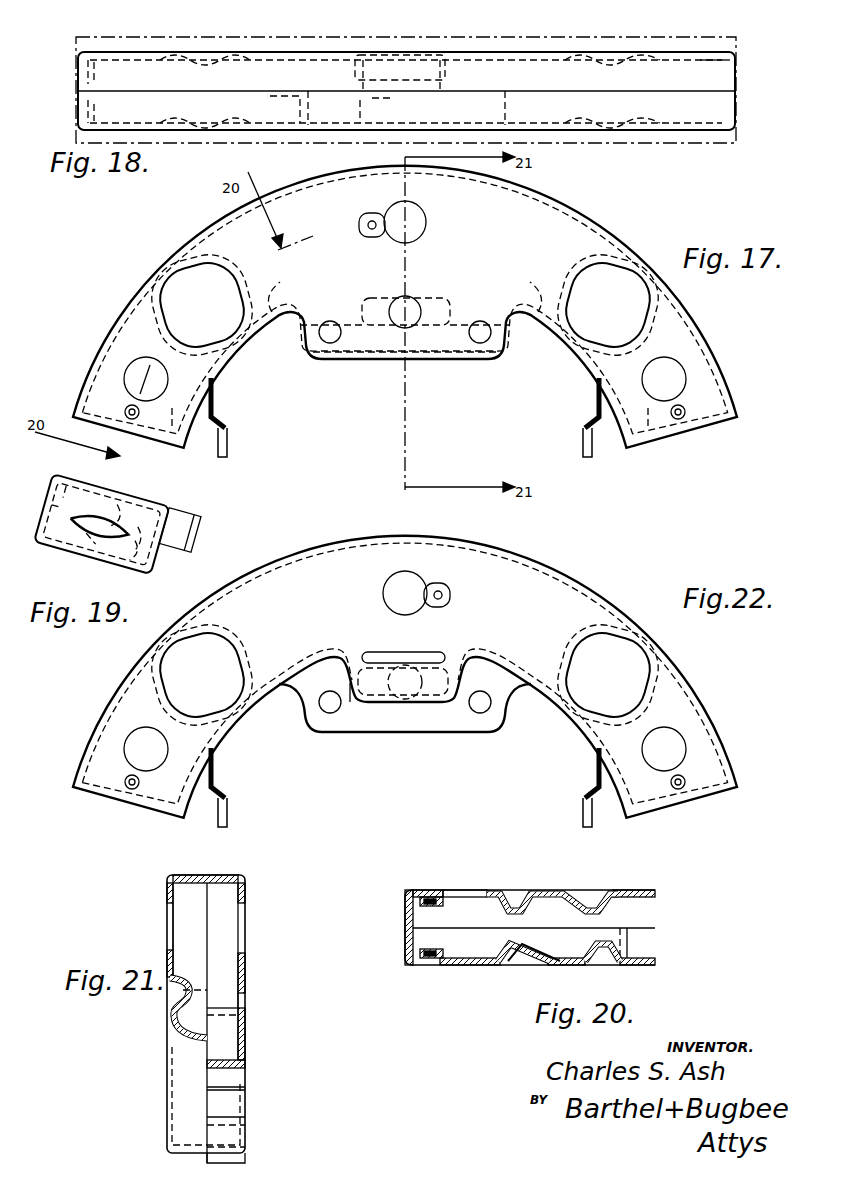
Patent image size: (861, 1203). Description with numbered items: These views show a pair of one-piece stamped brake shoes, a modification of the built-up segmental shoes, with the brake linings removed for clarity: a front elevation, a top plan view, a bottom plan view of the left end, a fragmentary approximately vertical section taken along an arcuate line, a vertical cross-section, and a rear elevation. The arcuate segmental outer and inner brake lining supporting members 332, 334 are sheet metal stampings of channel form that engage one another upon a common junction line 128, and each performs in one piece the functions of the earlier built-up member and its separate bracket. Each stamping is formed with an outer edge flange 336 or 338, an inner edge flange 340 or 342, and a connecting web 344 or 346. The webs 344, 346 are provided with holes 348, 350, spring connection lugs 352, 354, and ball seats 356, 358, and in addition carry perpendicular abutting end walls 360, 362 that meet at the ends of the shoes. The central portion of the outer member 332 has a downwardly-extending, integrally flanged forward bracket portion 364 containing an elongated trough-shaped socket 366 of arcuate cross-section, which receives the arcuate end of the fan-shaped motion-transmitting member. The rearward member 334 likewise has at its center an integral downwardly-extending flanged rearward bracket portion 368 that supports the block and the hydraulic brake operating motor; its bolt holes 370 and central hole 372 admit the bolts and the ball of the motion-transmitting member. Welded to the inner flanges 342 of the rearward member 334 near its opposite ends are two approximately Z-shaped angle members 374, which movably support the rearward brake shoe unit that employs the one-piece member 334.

In FIG. 18, the common junction line 128 is at (184, 100).
In FIG. 21, the common junction line 128 is at (220, 940).
In FIG. 18, the outer brake lining supporting member 332 is at (737, 72).
In FIG. 17, the outer brake lining supporting member 332 is at (405, 307).
In FIG. 19, the outer brake lining supporting member 332 is at (50, 556).
In FIG. 22, the outer brake lining supporting member 332 is at (583, 585).
In FIG. 21, the outer brake lining supporting member 332 is at (160, 882).
In FIG. 20, the outer brake lining supporting member 332 is at (645, 884).
In FIG. 18, the inner brake lining supporting member 334 is at (737, 115).
In FIG. 17, the inner brake lining supporting member 334 is at (222, 209).
In FIG. 19, the inner brake lining supporting member 334 is at (82, 480).
In FIG. 21, the inner brake lining supporting member 334 is at (255, 875).
In FIG. 20, the inner brake lining supporting member 334 is at (648, 970).
In FIG. 18, the outer edge flange 336 is at (708, 63).
In FIG. 19, the outer edge flange 336 is at (48, 522).
In FIG. 22, the outer edge flange 336 is at (312, 555).
In FIG. 18, the outer edge flange 338 is at (700, 125).
In FIG. 17, the outer edge flange 338 is at (305, 186).
In FIG. 19, the outer edge flange 338 is at (53, 488).
In FIG. 19, the inner edge flange 340 is at (146, 576).
In FIG. 22, the inner edge flange 340 is at (309, 658).
In FIG. 17, the inner edge flange 342 is at (284, 290).
In FIG. 19, the inner edge flange 342 is at (166, 500).
In FIG. 18, the connecting web 344 is at (262, 66).
In FIG. 19, the connecting web 344 is at (118, 566).
In FIG. 22, the connecting web 344 is at (518, 576).
In FIG. 21, the connecting web 344 is at (168, 898).
In FIG. 20, the connecting web 344 is at (648, 898).
In FIG. 18, the connecting web 346 is at (406, 109).
In FIG. 17, the connecting web 346 is at (548, 228).
In FIG. 19, the connecting web 346 is at (144, 495).
In FIG. 21, the connecting web 346 is at (246, 898).
In FIG. 20, the connecting web 346 is at (645, 955).
In FIG. 22, the hole 348 is at (143, 732).
In FIG. 21, the hole 348 is at (168, 918).
In FIG. 20, the hole 348 is at (480, 890).
In FIG. 17, the hole 350 is at (145, 361).
In FIG. 21, the hole 350 is at (246, 920).
In FIG. 20, the hole 350 is at (482, 966).
In FIG. 22, the spring connection lug 352 is at (128, 784).
In FIG. 20, the spring connection lug 352 is at (440, 902).
In FIG. 18, the spring connection lug 354 is at (380, 110).
In FIG. 17, the spring connection lug 354 is at (126, 409).
In FIG. 20, the spring connection lug 354 is at (440, 953).
In FIG. 18, the ball seat 356 is at (203, 50).
In FIG. 22, the ball seat 356 is at (405, 675).
In FIG. 20, the ball seat 356 is at (556, 891).
In FIG. 18, the ball seat 358 is at (200, 132).
In FIG. 17, the ball seat 358 is at (232, 282).
In FIG. 20, the ball seat 358 is at (528, 966).
In FIG. 18, the abutting end wall 360 is at (80, 75).
In FIG. 19, the abutting end wall 360 is at (138, 548).
In FIG. 22, the abutting end wall 360 is at (84, 795).
In FIG. 21, the abutting end wall 360 is at (196, 875).
In FIG. 20, the abutting end wall 360 is at (405, 915).
In FIG. 18, the abutting end wall 362 is at (78, 118).
In FIG. 17, the abutting end wall 362 is at (698, 400).
In FIG. 19, the abutting end wall 362 is at (68, 509).
In FIG. 21, the abutting end wall 362 is at (226, 875).
In FIG. 20, the abutting end wall 362 is at (405, 955).
In FIG. 18, the forward bracket portion 364 is at (448, 78).
In FIG. 17, the forward bracket portion 364 is at (362, 309).
In FIG. 22, the forward bracket portion 364 is at (350, 705).
In FIG. 21, the forward bracket portion 364 is at (170, 997).
In FIG. 17, the trough-shaped socket 366 is at (434, 298).
In FIG. 22, the trough-shaped socket 366 is at (436, 698).
In FIG. 21, the trough-shaped socket 366 is at (175, 1022).
In FIG. 18, the rearward bracket portion 368 is at (508, 105).
In FIG. 17, the rearward bracket portion 368 is at (376, 360).
In FIG. 22, the rearward bracket portion 368 is at (390, 722).
In FIG. 21, the rearward bracket portion 368 is at (247, 1065).
In FIG. 17, the bolt hole 370 is at (330, 342).
In FIG. 22, the bolt hole 370 is at (330, 712).
In FIG. 17, the central hole 372 is at (395, 302).
In FIG. 22, the central hole 372 is at (396, 653).
In FIG. 17, the Z-shaped angle member 374 is at (228, 410).
In FIG. 19, the Z-shaped angle member 374 is at (197, 527).
In FIG. 22, the Z-shaped angle member 374 is at (228, 790).
In FIG. 21, the Z-shaped angle member 374 is at (240, 1140).